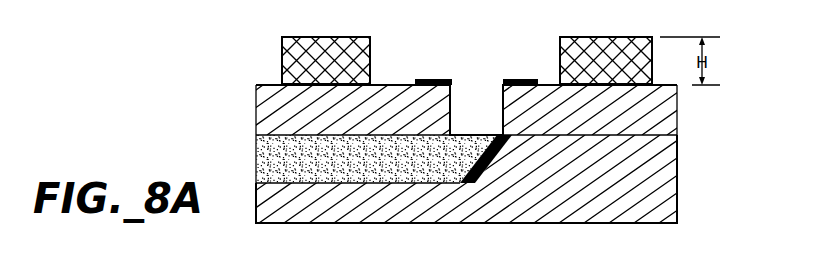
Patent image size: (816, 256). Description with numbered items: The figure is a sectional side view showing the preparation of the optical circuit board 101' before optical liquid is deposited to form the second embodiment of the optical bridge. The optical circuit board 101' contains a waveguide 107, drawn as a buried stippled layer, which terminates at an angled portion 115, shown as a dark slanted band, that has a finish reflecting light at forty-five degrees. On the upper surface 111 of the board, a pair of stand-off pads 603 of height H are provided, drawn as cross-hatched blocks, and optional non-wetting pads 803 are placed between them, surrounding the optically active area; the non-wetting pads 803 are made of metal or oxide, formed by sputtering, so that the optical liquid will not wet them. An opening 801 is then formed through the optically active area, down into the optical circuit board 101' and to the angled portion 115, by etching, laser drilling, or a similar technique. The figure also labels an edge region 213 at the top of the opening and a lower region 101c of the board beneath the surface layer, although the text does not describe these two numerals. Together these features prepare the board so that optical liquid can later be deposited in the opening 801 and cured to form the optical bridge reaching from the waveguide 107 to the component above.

The stand-off pads 603 is at (302, 37).
The non-wetting pads 803 is at (425, 80).
The opening edge 213 is at (466, 83).
The opening 801 is at (476, 113).
The surface 111 is at (661, 84).
The substrate region 101c is at (665, 122).
The optical circuit board 101' is at (459, 179).
The waveguide 107 is at (257, 146).
The angled portion 115 is at (487, 170).